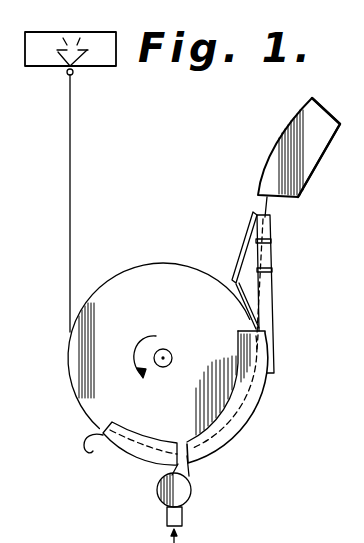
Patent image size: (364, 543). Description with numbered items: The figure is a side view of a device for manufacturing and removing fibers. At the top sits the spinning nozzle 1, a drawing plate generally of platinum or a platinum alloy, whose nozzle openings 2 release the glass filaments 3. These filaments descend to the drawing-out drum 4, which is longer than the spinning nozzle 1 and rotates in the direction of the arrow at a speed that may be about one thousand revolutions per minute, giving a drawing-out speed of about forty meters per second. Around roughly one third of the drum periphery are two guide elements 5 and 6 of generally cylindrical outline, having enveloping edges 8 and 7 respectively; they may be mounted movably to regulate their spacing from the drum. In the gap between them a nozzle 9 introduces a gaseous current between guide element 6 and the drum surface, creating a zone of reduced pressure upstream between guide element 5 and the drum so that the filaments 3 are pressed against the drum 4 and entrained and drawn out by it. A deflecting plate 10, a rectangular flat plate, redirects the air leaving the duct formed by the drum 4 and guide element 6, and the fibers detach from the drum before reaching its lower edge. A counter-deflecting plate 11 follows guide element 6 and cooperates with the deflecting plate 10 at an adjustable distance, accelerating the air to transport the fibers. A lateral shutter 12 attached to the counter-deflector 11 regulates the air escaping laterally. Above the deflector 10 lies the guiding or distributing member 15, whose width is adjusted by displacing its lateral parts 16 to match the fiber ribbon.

The spinning nozzle 1 is at (62, 65).
The nozzle openings 2 is at (75, 73).
The glass filaments 3 is at (68, 184).
The drawing-out drum 4 is at (132, 288).
The guide element 5 is at (132, 464).
The guide element 6 is at (256, 422).
The enveloping edge 7 is at (248, 357).
The enveloping edge 8 is at (138, 440).
The nozzle 9 is at (186, 488).
The deflecting plate 10 is at (246, 251).
The counter-deflecting plate 11 is at (272, 253).
The lateral shutter 12 is at (258, 295).
The guiding or distributing member 15 is at (281, 135).
The lateral parts 16 is at (298, 158).